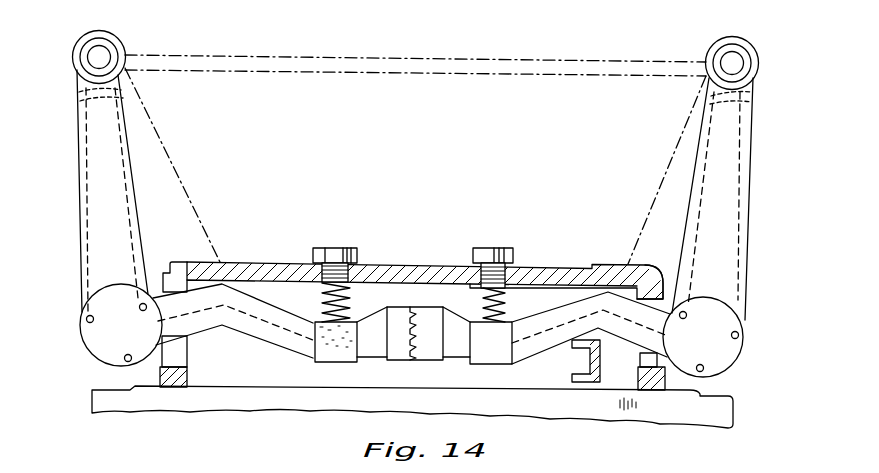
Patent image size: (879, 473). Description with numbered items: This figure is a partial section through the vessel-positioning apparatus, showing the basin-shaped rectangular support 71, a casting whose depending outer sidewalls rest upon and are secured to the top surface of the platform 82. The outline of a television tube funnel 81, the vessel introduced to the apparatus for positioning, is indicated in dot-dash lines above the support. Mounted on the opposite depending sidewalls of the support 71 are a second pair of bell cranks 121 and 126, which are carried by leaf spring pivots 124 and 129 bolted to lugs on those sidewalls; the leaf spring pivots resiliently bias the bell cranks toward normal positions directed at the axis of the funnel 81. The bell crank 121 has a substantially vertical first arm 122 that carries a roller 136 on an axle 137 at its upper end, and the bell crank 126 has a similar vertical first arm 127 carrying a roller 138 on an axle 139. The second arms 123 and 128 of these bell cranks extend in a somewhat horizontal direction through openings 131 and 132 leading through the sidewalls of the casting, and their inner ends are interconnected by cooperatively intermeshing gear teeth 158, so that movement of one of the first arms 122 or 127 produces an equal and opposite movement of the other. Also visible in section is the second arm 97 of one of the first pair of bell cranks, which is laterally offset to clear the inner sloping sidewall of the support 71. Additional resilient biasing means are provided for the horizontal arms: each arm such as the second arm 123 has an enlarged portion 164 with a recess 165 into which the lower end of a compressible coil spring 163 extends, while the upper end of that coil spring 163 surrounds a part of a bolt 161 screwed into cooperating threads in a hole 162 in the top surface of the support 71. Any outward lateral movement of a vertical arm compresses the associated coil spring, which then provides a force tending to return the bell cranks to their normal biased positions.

The support 71 is at (272, 262).
The television tube funnel 81 is at (453, 60).
The platform 82 is at (659, 430).
The second arm 97 is at (600, 362).
The bell crank 121 is at (750, 222).
The first arm 122 is at (736, 160).
The second arm 123 is at (544, 333).
The leaf spring pivot 124 is at (733, 370).
The bell crank 126 is at (79, 248).
The first arm 127 is at (85, 188).
The second arm 128 is at (205, 336).
The leaf spring pivot 129 is at (86, 352).
The opening 131 is at (668, 298).
The opening 132 is at (182, 358).
The roller 136 is at (760, 66).
The axle 137 is at (725, 62).
The roller 138 is at (82, 36).
The axle 139 is at (103, 53).
The gear teeth 158 is at (410, 308).
The bolt 161 is at (498, 252).
The hole 162 is at (485, 273).
The right spring 163 is at (497, 308).
The enlarged portion 164 is at (471, 365).
The recess 165 is at (457, 367).